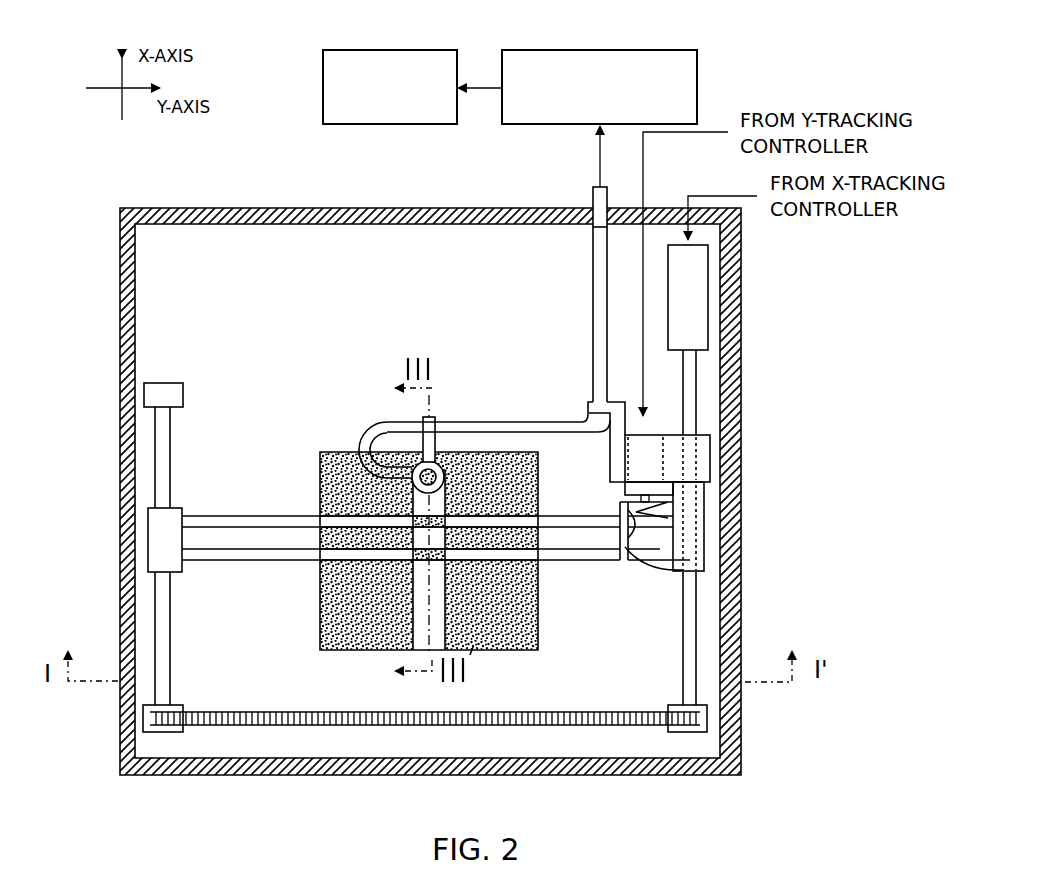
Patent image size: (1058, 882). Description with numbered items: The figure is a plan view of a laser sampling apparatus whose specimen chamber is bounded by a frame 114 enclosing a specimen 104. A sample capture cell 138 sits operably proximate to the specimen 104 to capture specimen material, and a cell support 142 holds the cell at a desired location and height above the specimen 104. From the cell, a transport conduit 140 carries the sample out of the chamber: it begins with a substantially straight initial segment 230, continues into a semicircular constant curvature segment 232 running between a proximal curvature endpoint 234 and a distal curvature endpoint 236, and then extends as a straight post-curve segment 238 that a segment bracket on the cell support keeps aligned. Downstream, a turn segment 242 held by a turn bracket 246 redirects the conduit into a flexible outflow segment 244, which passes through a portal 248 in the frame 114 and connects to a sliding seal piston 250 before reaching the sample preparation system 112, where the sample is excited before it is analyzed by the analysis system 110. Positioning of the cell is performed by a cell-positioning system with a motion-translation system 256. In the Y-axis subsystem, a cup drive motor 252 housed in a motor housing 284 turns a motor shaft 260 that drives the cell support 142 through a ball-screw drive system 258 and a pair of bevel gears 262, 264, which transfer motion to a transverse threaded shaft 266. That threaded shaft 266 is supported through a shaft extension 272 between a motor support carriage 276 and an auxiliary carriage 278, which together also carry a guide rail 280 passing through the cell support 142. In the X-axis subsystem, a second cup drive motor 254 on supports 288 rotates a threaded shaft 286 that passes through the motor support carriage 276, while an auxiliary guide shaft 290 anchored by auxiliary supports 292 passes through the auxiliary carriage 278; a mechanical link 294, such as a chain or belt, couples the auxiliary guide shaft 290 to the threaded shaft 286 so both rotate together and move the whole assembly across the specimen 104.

The analysis system 110 is at (341, 50).
The sample preparation system 112 is at (527, 50).
The frame 114 is at (275, 208).
The specimen 104 is at (318, 478).
The sample capture cell 138 is at (461, 452).
The transport conduit 140 is at (358, 419).
The cell support 142 is at (428, 552).
The initial segment 230 is at (388, 466).
The constant curvature segment 232 is at (352, 437).
The proximal curvature endpoint 234 is at (320, 496).
The distal curvature endpoint 236 is at (386, 456).
The post-curve segment 238 is at (493, 387).
The turn segment 242 is at (598, 421).
The outflow segment 244 is at (601, 258).
The turn bracket 246 is at (593, 400).
The portal 248 is at (593, 212).
The sliding seal piston 250 is at (594, 297).
The cup drive motor 252 is at (658, 424).
The cup drive motor 254 is at (697, 316).
The motion-translation system 256 is at (612, 502).
The ball-screw drive system 258 is at (409, 521).
The motor shaft 260 is at (435, 417).
The bevel gear 262 is at (622, 507).
The bevel gear 264 is at (627, 542).
The threaded shaft 266 is at (217, 516).
The shaft extension 272 is at (648, 525).
The motor support carriage 276 is at (706, 447).
The auxiliary carriage 278 is at (160, 555).
The guide rail 280 is at (217, 561).
The motor housing 284 is at (648, 447).
The threaded shaft 286 is at (688, 648).
The supports 288 is at (693, 732).
The auxiliary guide shaft 290 is at (165, 617).
The auxiliary supports 292 is at (172, 390).
The mechanical link 294 is at (478, 712).